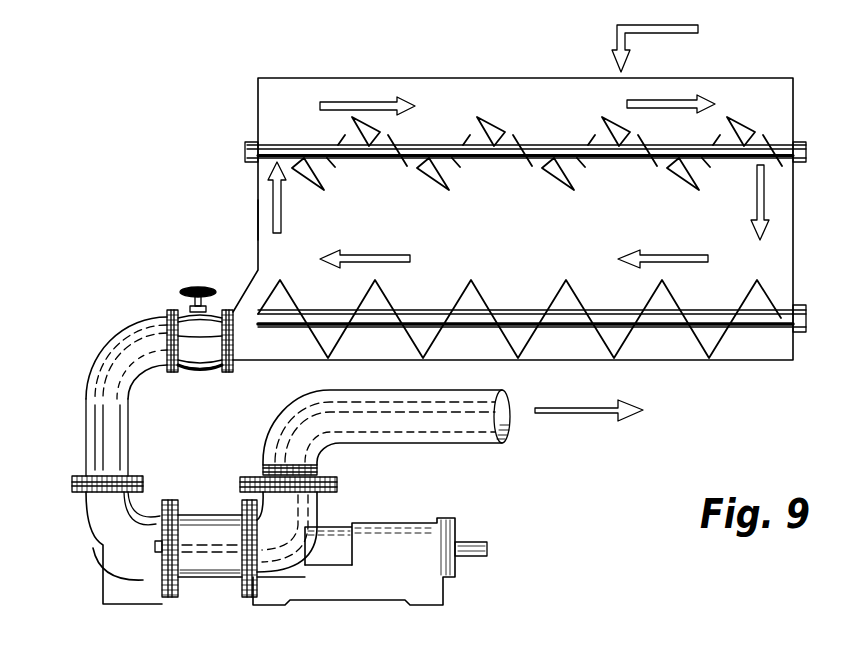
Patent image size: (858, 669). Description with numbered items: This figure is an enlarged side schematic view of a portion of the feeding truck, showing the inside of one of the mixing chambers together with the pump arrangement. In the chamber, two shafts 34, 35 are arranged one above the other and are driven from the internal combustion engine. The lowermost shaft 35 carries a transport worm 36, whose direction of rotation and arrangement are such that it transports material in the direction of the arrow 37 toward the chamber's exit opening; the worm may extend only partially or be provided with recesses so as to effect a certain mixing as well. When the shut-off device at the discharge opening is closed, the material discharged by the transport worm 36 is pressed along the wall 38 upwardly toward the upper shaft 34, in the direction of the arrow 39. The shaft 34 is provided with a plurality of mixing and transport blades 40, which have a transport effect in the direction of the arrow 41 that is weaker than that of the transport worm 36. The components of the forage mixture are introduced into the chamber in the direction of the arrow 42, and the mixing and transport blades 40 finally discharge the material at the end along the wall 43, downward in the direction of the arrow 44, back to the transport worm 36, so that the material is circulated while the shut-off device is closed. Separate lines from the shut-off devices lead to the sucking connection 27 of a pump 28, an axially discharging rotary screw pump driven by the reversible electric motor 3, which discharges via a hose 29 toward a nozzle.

The electric motor 3 is at (390, 592).
The sucking connection 27 is at (80, 478).
The pump 28 is at (205, 580).
The hose 29 is at (465, 445).
The shaft 34 is at (785, 147).
The shaft 35 is at (785, 325).
The transport worm 36 is at (534, 348).
The arrow 37 is at (377, 257).
The wall 38 is at (258, 219).
The arrow 39 is at (283, 212).
The mixing and transport blades 40 is at (560, 184).
The arrow 41 is at (363, 103).
The arrow 42 is at (617, 33).
The wall 43 is at (795, 205).
The arrow 44 is at (755, 200).